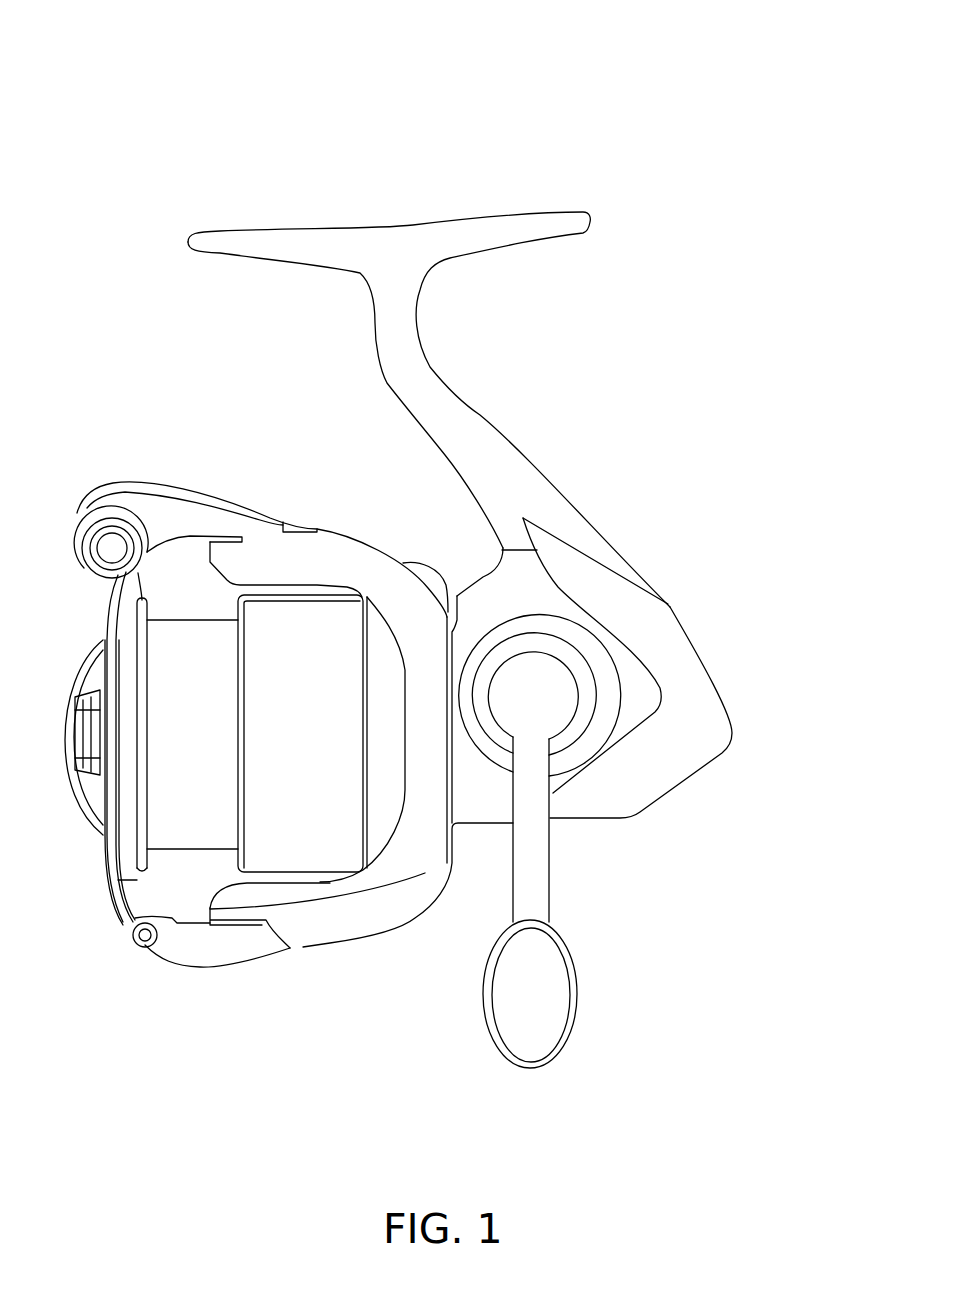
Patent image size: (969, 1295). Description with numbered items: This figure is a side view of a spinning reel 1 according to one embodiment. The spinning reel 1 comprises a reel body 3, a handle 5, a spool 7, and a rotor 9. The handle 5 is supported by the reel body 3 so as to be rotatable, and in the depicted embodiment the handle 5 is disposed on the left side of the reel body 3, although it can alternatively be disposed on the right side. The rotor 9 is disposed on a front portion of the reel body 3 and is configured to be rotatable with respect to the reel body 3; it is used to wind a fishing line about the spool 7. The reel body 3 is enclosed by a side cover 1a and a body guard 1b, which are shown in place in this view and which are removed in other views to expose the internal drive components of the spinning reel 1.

The spinning reel 1 is at (522, 135).
The reel body 3 is at (597, 503).
The side cover 1a is at (488, 798).
The body guard 1b is at (668, 765).
The handle 5 is at (560, 852).
The spool 7 is at (177, 595).
The rotor 9 is at (200, 988).